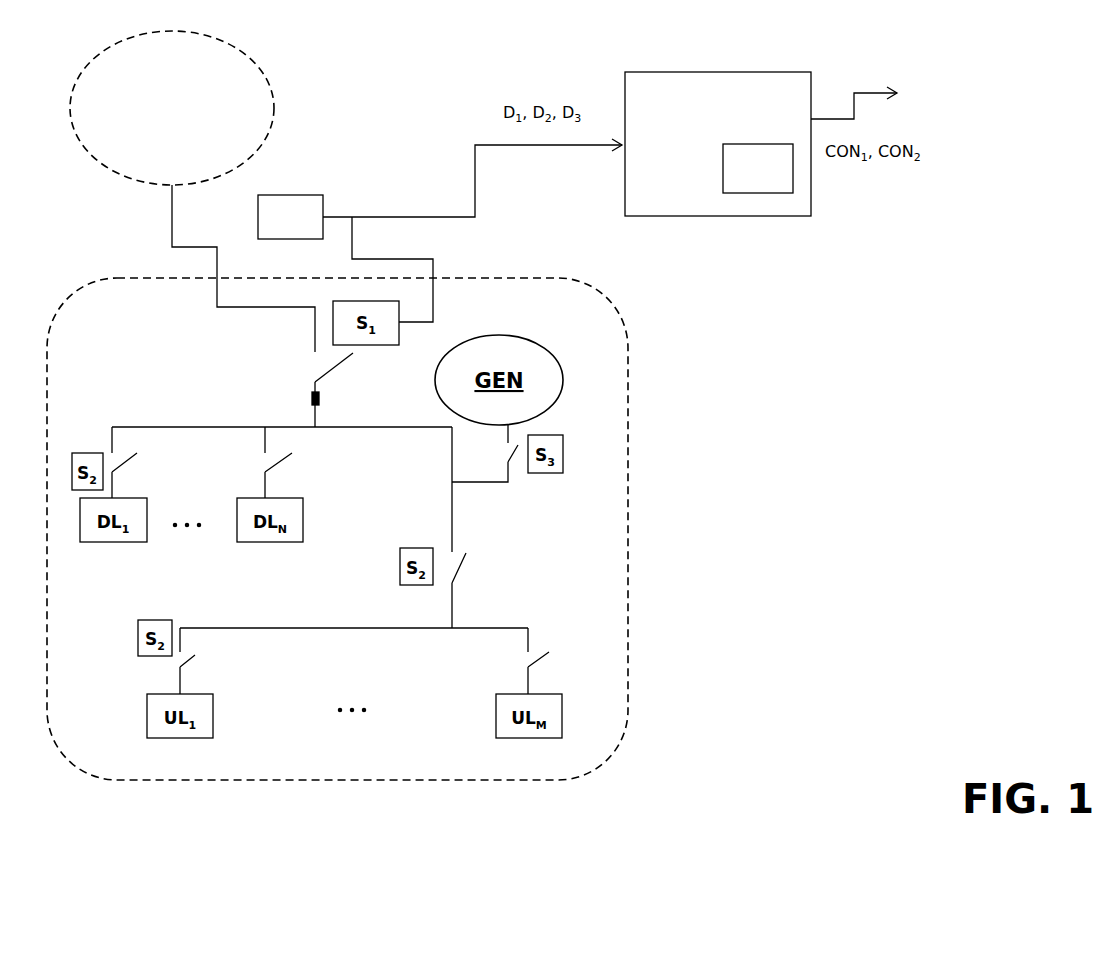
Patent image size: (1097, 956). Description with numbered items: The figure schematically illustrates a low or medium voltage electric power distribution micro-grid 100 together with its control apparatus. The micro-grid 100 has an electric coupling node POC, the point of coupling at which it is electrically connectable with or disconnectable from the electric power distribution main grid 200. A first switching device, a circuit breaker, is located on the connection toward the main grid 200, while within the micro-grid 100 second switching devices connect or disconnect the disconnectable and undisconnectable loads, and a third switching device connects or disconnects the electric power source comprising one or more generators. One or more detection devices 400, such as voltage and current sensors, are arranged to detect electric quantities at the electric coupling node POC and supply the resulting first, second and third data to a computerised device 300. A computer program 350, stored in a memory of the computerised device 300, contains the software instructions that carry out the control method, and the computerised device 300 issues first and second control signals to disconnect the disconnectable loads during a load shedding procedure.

The electric power distribution micro-grid 100 is at (632, 523).
The electric power distribution main grid 200 is at (172, 108).
The computerised device 300 is at (718, 144).
The computer program 350 is at (758, 168).
The detection devices 400 is at (290, 217).
The electric coupling node POC is at (290, 402).